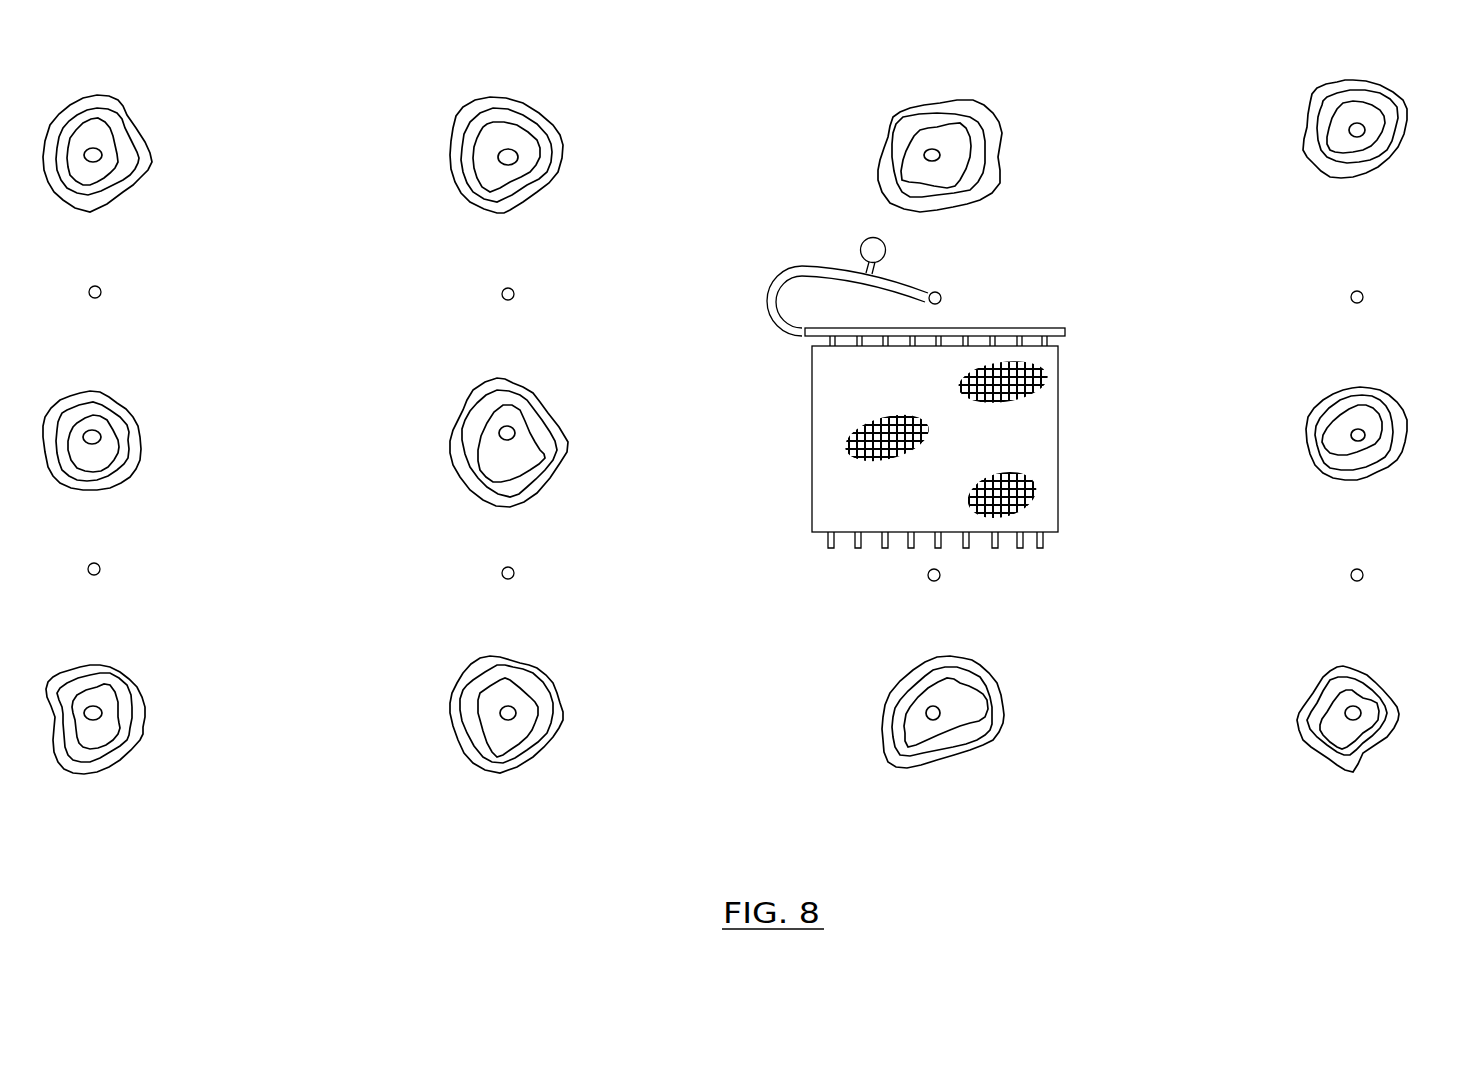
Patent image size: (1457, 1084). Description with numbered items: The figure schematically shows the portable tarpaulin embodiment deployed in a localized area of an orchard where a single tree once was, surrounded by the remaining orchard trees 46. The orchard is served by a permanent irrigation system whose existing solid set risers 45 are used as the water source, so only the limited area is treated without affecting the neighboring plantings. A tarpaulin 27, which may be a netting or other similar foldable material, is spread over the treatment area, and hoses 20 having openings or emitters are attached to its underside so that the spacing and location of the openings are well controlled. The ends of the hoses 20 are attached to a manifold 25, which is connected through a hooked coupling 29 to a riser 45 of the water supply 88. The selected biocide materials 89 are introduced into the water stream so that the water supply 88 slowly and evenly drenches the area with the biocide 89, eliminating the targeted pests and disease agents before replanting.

The hoses 20 is at (826, 540).
The manifold 25 is at (816, 328).
The tarpaulin 27 is at (1035, 425).
The curved hook portion 29 is at (782, 272).
The solid set risers 45 is at (514, 297).
The orchard trees 46 is at (555, 165).
The water supply 88 is at (907, 287).
The biocide materials 89 is at (866, 240).